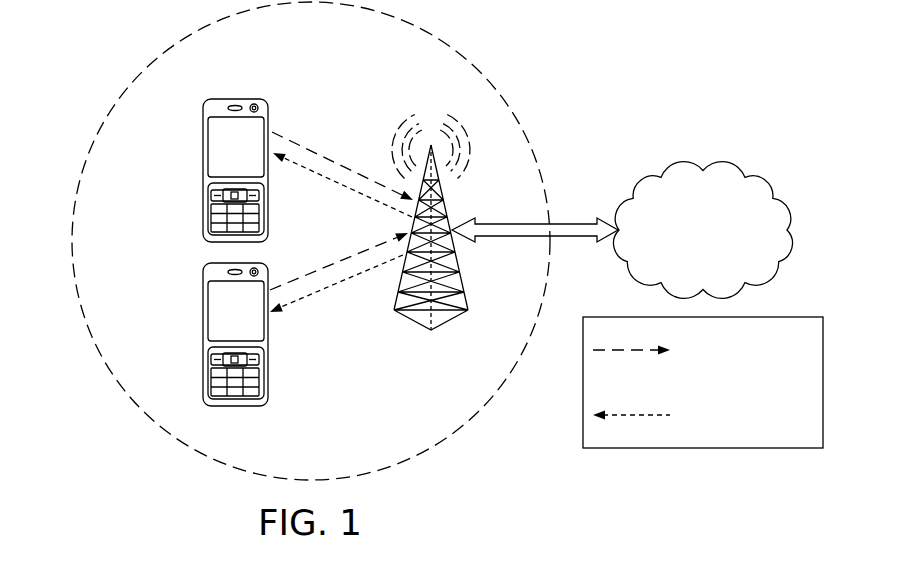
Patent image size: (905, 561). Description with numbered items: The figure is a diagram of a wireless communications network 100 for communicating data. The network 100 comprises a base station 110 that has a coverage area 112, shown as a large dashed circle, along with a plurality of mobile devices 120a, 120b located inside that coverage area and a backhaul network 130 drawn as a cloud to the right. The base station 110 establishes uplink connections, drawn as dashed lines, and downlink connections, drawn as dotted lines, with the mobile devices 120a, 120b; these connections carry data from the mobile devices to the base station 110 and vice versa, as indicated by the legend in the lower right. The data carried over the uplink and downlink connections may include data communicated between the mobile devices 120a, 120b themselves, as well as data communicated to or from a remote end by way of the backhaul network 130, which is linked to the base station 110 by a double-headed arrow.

The network 100 is at (627, 57).
The coverage area 112 is at (107, 117).
The base station 110 is at (450, 317).
The mobile device 120a is at (203, 170).
The mobile device 120b is at (203, 334).
The backhaul network 130 is at (703, 165).